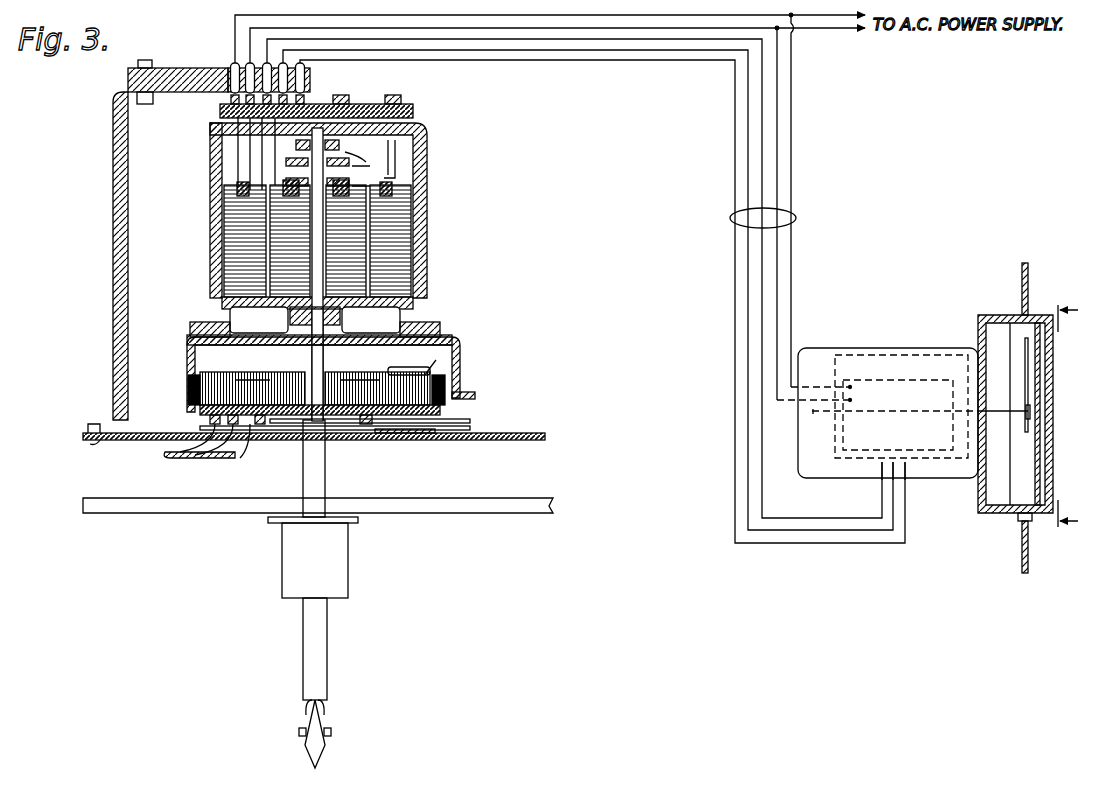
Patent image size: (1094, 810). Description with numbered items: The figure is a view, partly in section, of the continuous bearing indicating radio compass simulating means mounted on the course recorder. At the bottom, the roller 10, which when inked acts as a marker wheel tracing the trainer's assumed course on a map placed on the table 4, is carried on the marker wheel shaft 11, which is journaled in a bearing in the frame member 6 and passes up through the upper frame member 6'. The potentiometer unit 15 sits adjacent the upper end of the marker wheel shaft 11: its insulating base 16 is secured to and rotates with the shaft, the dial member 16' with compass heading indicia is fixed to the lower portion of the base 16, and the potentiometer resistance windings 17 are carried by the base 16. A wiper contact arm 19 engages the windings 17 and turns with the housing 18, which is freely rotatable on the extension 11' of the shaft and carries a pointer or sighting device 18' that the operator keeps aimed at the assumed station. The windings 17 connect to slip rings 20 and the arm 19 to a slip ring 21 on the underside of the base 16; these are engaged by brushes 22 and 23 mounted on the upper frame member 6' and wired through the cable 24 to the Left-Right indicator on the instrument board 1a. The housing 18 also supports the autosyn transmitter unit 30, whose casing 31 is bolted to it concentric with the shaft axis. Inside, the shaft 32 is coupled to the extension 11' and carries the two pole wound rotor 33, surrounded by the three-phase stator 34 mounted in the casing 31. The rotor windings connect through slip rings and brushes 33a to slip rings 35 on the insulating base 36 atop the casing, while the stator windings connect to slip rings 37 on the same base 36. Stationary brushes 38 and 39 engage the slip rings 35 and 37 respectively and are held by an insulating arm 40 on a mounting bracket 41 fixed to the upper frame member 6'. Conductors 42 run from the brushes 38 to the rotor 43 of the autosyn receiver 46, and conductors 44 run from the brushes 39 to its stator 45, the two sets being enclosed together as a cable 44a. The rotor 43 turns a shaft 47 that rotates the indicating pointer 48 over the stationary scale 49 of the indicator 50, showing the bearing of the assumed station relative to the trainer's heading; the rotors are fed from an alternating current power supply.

The instrument board 1a is at (1028, 555).
The table 4 is at (1068, 416).
The frame member 6 is at (318, 494).
The upper frame member 6' is at (323, 428).
The roller 10 is at (321, 742).
The marker wheel shaft 11 is at (313, 414).
The extension of the marker wheel shaft 11' is at (322, 364).
The potentiometer unit 15 is at (470, 360).
The base 16 is at (393, 405).
The dial member 16' is at (360, 417).
The potentiometer resistance windings 17 is at (350, 372).
The housing 18 is at (338, 331).
The pointer or sighting device 18' is at (479, 383).
The wiper contact arm 19 is at (395, 366).
The slip rings 20 is at (437, 431).
The slip ring 21 is at (265, 428).
The brushes 22 is at (208, 424).
The brushes 23 is at (250, 448).
The cable 24 is at (178, 458).
The autosyn transmitter unit 30 is at (447, 252).
The casing 31 is at (428, 216).
The shaft 32 is at (259, 320).
The two pole wound rotor 33 is at (371, 320).
The slip rings and brushes 33a is at (361, 150).
The stator 34 is at (405, 180).
The slip rings 35 is at (393, 100).
The base 36 is at (414, 110).
The slip rings 37 is at (341, 100).
The stationary brushes 38 is at (231, 63).
The stationary brushes 39 is at (306, 72).
The arm 40 is at (176, 66).
The mounting bracket 41 is at (127, 205).
The conductors 42 is at (496, 22).
The rotor 43 is at (890, 356).
The conductors 44 is at (578, 40).
The cable 44a is at (731, 219).
The stator 45 is at (927, 478).
The autosyn receiver 46 is at (952, 337).
The shaft 47 is at (975, 410).
The indicating pointer 48 is at (1024, 338).
The stationary scale 49 is at (1016, 518).
The indicator 50 is at (978, 312).